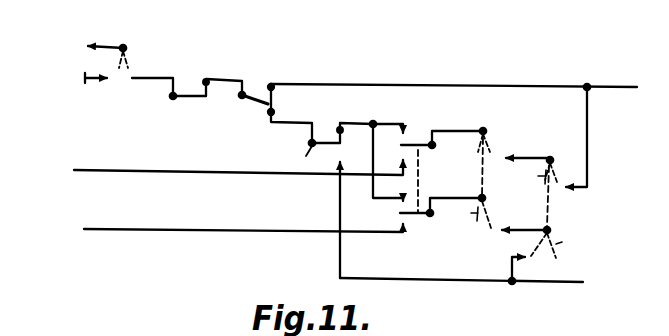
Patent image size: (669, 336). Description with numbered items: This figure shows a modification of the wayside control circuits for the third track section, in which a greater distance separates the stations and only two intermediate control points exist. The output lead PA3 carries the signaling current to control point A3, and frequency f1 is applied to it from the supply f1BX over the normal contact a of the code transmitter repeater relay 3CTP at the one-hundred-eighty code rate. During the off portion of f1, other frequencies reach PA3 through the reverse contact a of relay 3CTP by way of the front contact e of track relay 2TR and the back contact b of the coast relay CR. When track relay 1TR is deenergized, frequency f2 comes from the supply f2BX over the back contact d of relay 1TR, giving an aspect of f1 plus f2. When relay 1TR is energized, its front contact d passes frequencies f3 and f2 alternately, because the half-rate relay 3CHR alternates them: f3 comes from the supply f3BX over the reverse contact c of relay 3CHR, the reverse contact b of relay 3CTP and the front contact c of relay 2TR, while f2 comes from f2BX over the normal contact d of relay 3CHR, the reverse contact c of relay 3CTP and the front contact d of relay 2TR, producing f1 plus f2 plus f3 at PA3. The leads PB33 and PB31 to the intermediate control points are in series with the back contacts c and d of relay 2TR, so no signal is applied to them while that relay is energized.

The control point A3 output PA3 is at (79, 45).
The code transmitter repeater relay 3CTP is at (308, 127).
The frequency f1 supply f1BX is at (73, 87).
The track relay 2TR is at (302, 146).
The coast relay CR is at (254, 93).
The track relay 1TR is at (323, 135).
The code half-rate relay 3CHR is at (544, 197).
The frequency f3 supply f3BX is at (469, 80).
The control point B33 lead PB33 is at (216, 166).
The control point B31 lead PB31 is at (218, 228).
The frequency f2 supply f2BX is at (479, 270).